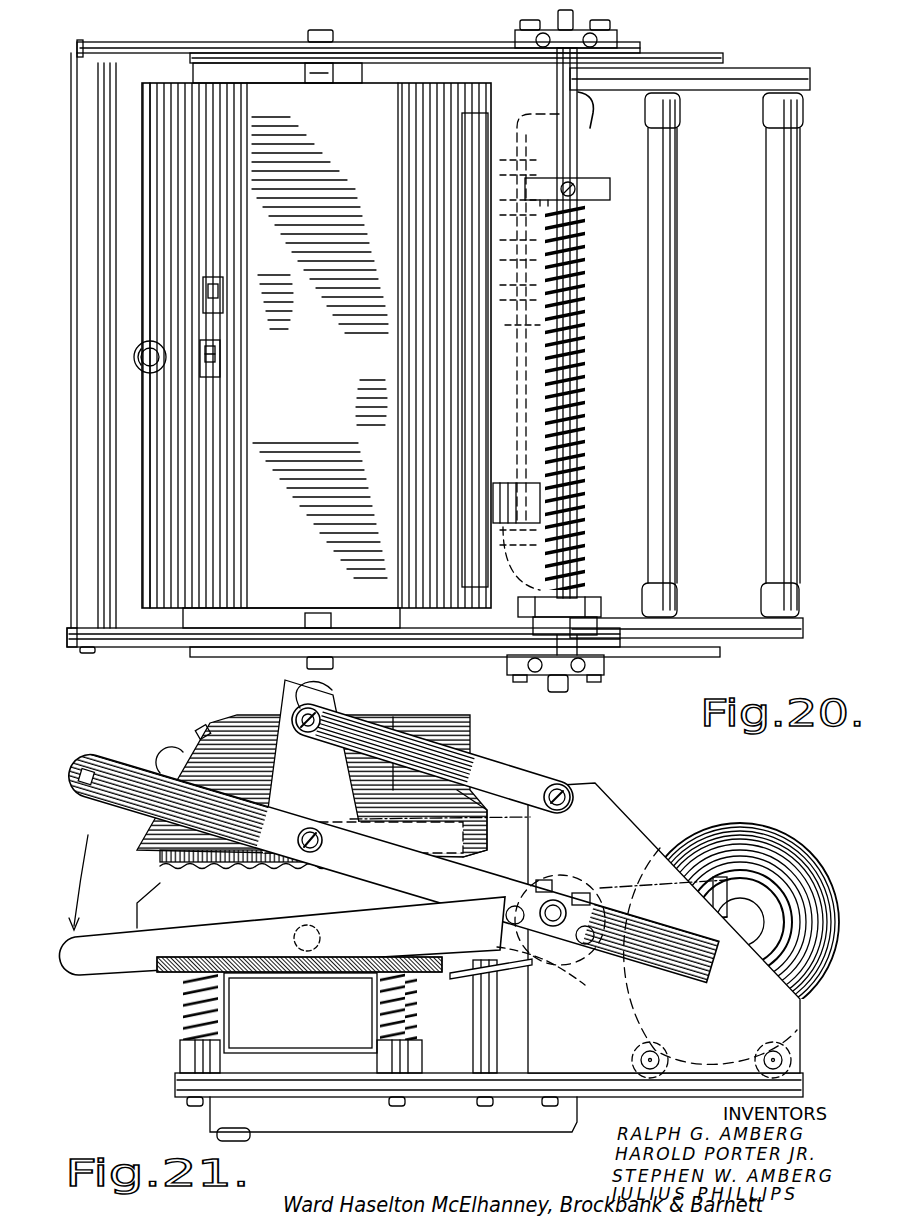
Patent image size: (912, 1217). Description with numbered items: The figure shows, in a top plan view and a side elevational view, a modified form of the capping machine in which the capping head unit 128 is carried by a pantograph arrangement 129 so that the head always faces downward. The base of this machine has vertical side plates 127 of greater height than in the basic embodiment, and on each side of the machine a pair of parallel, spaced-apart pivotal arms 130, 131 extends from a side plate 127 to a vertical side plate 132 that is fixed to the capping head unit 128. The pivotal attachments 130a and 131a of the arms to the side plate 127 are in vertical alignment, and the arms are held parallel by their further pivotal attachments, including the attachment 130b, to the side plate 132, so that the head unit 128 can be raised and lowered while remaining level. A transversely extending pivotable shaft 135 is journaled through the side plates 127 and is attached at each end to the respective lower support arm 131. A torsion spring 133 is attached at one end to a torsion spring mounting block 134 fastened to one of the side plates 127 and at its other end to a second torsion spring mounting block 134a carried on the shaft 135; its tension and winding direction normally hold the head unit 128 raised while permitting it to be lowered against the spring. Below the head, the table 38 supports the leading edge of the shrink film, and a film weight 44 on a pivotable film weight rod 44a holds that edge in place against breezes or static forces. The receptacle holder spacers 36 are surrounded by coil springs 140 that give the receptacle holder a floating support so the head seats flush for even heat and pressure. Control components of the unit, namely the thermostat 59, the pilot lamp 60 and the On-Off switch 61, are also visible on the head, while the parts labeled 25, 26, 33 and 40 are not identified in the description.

In FIG. 21, the spool 25 is at (757, 833).
In FIG. 20, the guide rods 26 is at (770, 322).
In FIG. 20, the side frame member 33 is at (97, 436).
In FIG. 21, the receptacle holder spacer 36 is at (180, 1054).
In FIG. 20, the table 38 is at (500, 500).
In FIG. 21, the table 38 is at (468, 969).
In FIG. 21, the base plate 40 is at (490, 1023).
In FIG. 20, the film weight 44 is at (546, 112).
In FIG. 21, the film weight 44 is at (523, 980).
In FIG. 20, the film weight rod 44a is at (584, 541).
In FIG. 21, the film weight rod 44a is at (548, 968).
In FIG. 20, the thermostat 59 is at (153, 339).
In FIG. 20, the pilot lamp 60 is at (210, 287).
In FIG. 20, the On-Off switch 61 is at (212, 364).
In FIG. 20, the vertical side plate 127 is at (736, 72).
In FIG. 21, the vertical side plate 127 is at (657, 1002).
In FIG. 20, the capping head unit 128 is at (340, 335).
In FIG. 21, the capping head unit 128 is at (222, 722).
In FIG. 21, the pantograph arrangement 129 is at (470, 720).
In FIG. 20, the pivotal arm 130 is at (436, 52).
In FIG. 21, the pivotal arm 130 is at (478, 765).
In FIG. 21, the pivotal attachment 130a is at (563, 790).
In FIG. 21, the pivotal attachment 130b is at (350, 704).
In FIG. 20, the pivotal arm 131 is at (190, 45).
In FIG. 21, the pivotal arm 131 is at (488, 882).
In FIG. 21, the pivotal attachment 131a is at (556, 900).
In FIG. 21, the vertical side plate 132 is at (322, 788).
In FIG. 20, the torsion spring 133 is at (583, 345).
In FIG. 20, the torsion spring mounting block 134 is at (594, 601).
In FIG. 20, the second torsion spring mounting block 134a is at (612, 170).
In FIG. 20, the pivotable shaft 135 is at (578, 133).
In FIG. 21, the coil spring 140 is at (183, 1010).